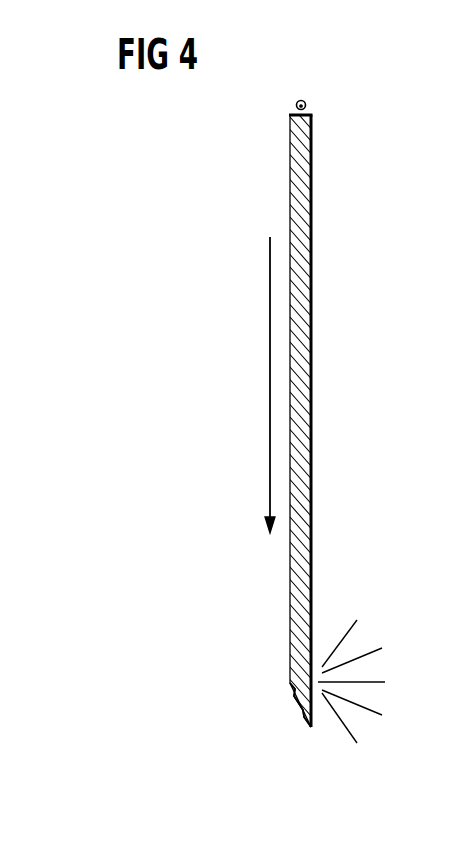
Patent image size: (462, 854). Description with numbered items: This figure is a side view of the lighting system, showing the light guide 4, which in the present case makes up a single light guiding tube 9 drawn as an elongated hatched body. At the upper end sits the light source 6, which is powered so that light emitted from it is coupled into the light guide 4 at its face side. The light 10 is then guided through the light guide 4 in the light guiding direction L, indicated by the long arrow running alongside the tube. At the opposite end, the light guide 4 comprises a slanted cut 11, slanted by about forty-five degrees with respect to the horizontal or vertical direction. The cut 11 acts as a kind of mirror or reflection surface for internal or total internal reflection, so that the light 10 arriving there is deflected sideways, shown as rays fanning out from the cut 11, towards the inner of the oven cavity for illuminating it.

The light guide 4 is at (250, 410).
The light guiding tube 9 is at (292, 164).
The light source 6 is at (299, 100).
The light guiding direction L is at (270, 393).
The light 10 is at (386, 606).
The slanted cut 11 is at (300, 703).